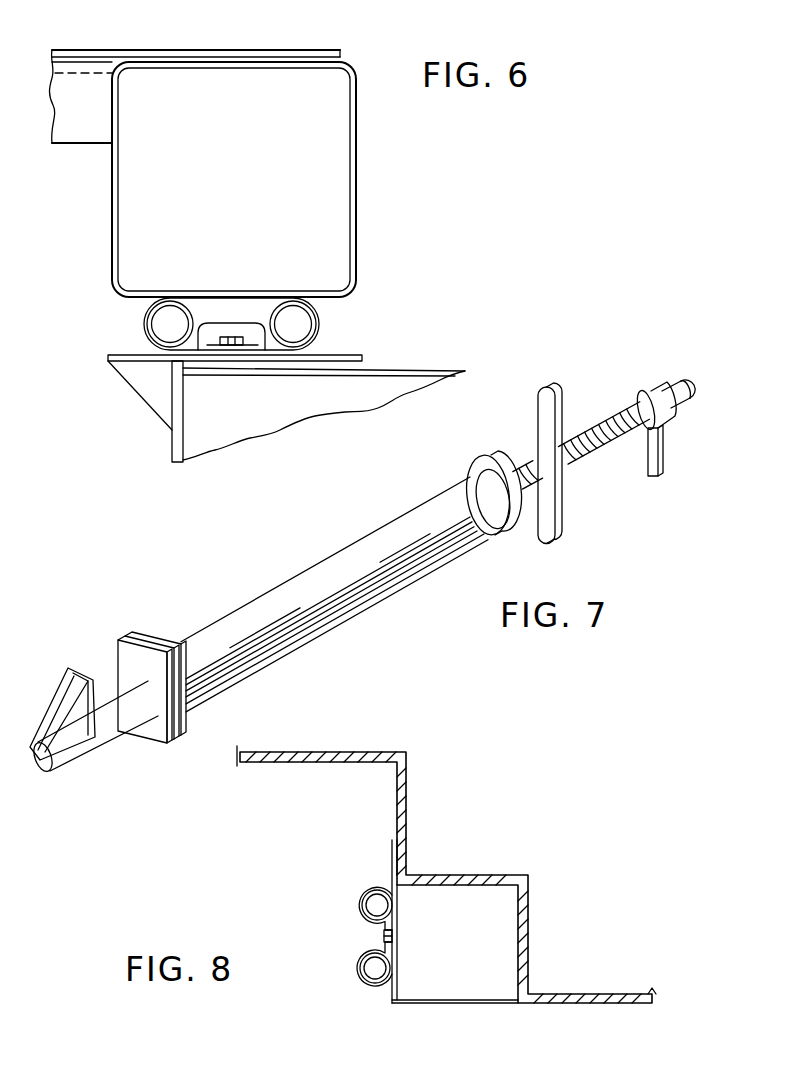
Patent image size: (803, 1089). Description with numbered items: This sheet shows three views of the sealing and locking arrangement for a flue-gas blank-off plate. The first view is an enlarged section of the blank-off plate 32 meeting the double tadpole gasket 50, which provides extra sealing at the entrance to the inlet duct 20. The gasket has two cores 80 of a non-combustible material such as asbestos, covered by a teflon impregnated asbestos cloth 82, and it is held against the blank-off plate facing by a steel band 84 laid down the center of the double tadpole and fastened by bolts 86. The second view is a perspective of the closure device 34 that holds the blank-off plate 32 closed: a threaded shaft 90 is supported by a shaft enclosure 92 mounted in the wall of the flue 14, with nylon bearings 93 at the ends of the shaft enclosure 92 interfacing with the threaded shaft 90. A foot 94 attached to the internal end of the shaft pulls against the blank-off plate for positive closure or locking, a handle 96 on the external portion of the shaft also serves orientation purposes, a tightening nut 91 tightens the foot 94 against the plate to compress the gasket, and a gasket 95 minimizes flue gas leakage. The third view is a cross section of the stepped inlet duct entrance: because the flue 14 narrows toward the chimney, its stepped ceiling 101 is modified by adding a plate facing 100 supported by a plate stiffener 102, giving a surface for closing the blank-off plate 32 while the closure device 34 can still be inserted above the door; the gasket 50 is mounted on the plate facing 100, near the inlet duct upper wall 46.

In FIG. 6, the blank-off plate 32 is at (114, 51).
In FIG. 6, the cores 80 is at (148, 321).
In FIG. 6, the teflon impregnated asbestos cloth 82 is at (330, 362).
In FIG. 6, the steel band 84 is at (252, 340).
In FIG. 6, the bolts 86 is at (223, 337).
In FIG. 6, the double tadpole gasket 50 is at (247, 382).
In FIG. 8, the double tadpole gasket 50 is at (362, 906).
In FIG. 7, the closure device 34 is at (308, 563).
In FIG. 7, the shaft enclosure 92 is at (363, 539).
In FIG. 7, the nylon bearings 93 is at (505, 532).
In FIG. 7, the threaded shaft 90 is at (607, 417).
In FIG. 7, the tightening nut 91 is at (557, 395).
In FIG. 7, the handle 96 is at (660, 474).
In FIG. 7, the gasket 95 is at (153, 720).
In FIG. 7, the foot 94 is at (78, 670).
In FIG. 8, the flue 14 is at (299, 838).
In FIG. 8, the inlet duct 20 is at (577, 1046).
In FIG. 8, the stepped ceiling 101 is at (348, 752).
In FIG. 8, the plate stiffener 102 is at (445, 985).
In FIG. 8, the plate facing 100 is at (388, 985).
In FIG. 8, the inlet duct upper wall 46 is at (650, 1003).